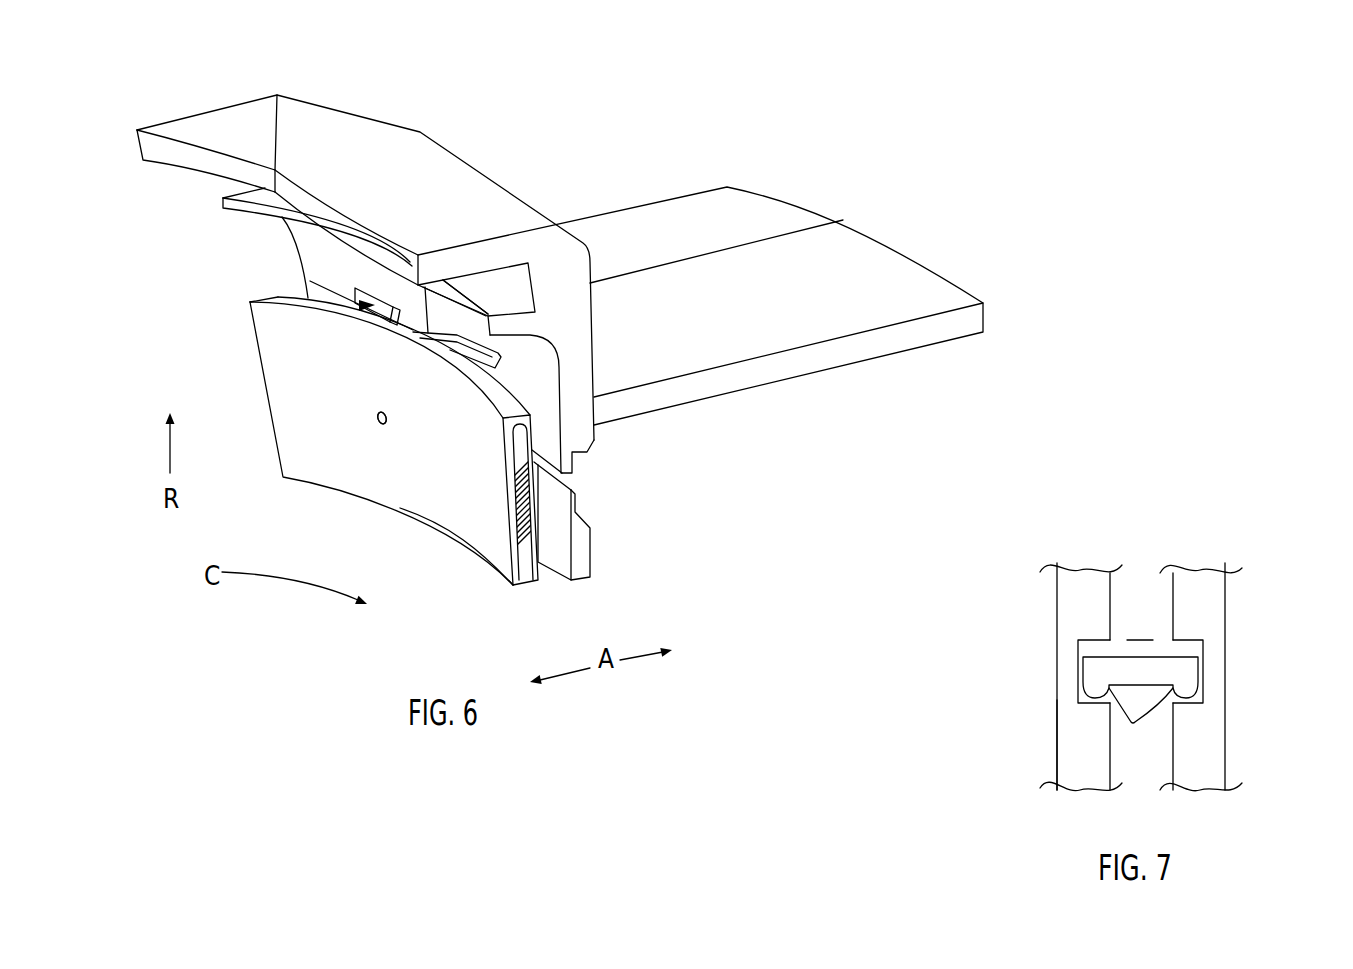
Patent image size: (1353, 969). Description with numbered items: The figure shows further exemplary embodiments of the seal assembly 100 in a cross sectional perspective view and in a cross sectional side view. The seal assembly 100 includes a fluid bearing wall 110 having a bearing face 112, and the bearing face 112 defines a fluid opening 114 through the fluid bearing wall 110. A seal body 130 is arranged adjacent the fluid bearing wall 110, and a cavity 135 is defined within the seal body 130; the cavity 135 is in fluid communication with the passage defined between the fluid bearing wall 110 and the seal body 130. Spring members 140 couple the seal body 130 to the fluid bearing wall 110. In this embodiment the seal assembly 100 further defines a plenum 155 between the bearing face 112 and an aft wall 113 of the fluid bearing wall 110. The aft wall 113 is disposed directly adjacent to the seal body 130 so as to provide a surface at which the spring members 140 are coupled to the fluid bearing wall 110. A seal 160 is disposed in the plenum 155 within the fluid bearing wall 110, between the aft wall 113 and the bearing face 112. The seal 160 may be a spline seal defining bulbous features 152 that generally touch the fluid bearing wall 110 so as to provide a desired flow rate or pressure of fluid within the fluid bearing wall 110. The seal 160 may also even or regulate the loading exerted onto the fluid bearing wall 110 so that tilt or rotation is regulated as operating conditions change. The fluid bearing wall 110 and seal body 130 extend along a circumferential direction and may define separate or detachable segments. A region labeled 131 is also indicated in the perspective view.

In FIG. 6, the seal assembly 100 is at (634, 92).
In FIG. 6, the fluid bearing wall 110 is at (442, 510).
In FIG. 7, the fluid bearing wall 110 is at (1057, 603).
In FIG. 6, the bearing face 112 is at (481, 552).
In FIG. 7, the bearing face 112 is at (1057, 735).
In FIG. 6, the aft wall 113 is at (546, 462).
In FIG. 7, the aft wall 113 is at (1235, 728).
In FIG. 6, the fluid opening 114 is at (368, 432).
In FIG. 6, the seal body 130 is at (512, 160).
In FIG. 6, the opening 131 is at (496, 290).
In FIG. 6, the cavity 135 is at (595, 505).
In FIG. 6, the spring member 140 is at (310, 281).
In FIG. 7, the bulbous features 152 is at (1141, 721).
In FIG. 7, the plenum 155 is at (1140, 624).
In FIG. 6, the seal 160 is at (531, 596).
In FIG. 7, the seal 160 is at (1100, 657).